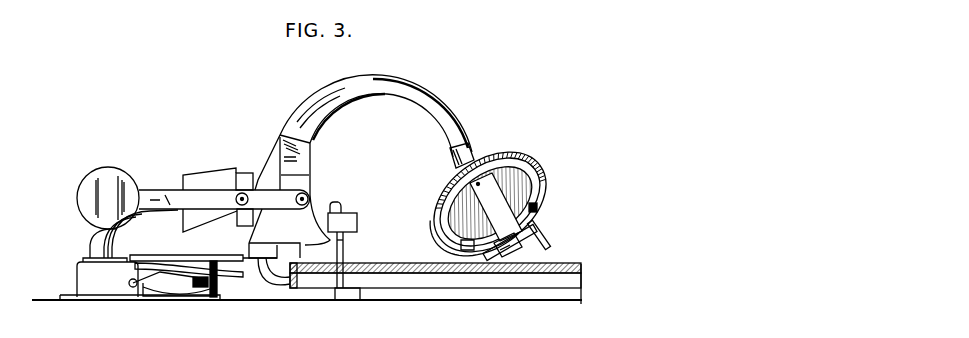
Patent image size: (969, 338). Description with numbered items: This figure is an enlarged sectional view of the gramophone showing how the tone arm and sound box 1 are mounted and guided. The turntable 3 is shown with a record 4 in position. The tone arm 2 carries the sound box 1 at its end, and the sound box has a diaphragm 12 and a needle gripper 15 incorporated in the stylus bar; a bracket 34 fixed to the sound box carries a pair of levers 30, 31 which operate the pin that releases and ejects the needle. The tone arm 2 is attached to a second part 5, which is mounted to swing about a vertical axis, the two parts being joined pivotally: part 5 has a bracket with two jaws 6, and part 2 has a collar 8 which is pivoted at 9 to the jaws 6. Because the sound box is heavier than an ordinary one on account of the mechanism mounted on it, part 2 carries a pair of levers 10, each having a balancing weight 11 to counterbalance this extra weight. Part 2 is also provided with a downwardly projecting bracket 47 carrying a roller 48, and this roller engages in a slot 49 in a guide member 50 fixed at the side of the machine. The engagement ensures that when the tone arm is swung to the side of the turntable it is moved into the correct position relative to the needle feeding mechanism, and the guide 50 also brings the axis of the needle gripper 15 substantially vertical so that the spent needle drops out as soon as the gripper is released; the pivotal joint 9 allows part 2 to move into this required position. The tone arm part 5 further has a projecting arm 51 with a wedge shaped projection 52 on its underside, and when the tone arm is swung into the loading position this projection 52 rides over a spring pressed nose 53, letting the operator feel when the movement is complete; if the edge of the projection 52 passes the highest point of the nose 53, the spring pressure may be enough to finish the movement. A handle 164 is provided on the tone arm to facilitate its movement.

The sound box 1 is at (537, 177).
The tone arm 2 is at (300, 117).
The turntable 3 is at (363, 262).
The record 4 is at (398, 275).
The second part of tone arm 5 is at (104, 243).
The jaws 6 is at (200, 181).
The collar 8 is at (243, 173).
The pivot 9 is at (238, 204).
The levers 10 is at (155, 195).
The balancing weight 11 is at (103, 186).
The diaphragm 12 is at (452, 231).
The needle gripper 15 is at (530, 251).
The lever 30 is at (488, 263).
The lever 31 is at (537, 230).
The bracket 34 is at (489, 203).
The downwardly projecting bracket 47 is at (288, 156).
The roller 48 is at (350, 224).
The slot 49 is at (285, 273).
The guide member 50 is at (332, 207).
The projecting arm 51 is at (203, 257).
The wedge shaped projection 52 is at (232, 270).
The spring pressed nose 53 is at (160, 263).
The handle 164 is at (458, 160).